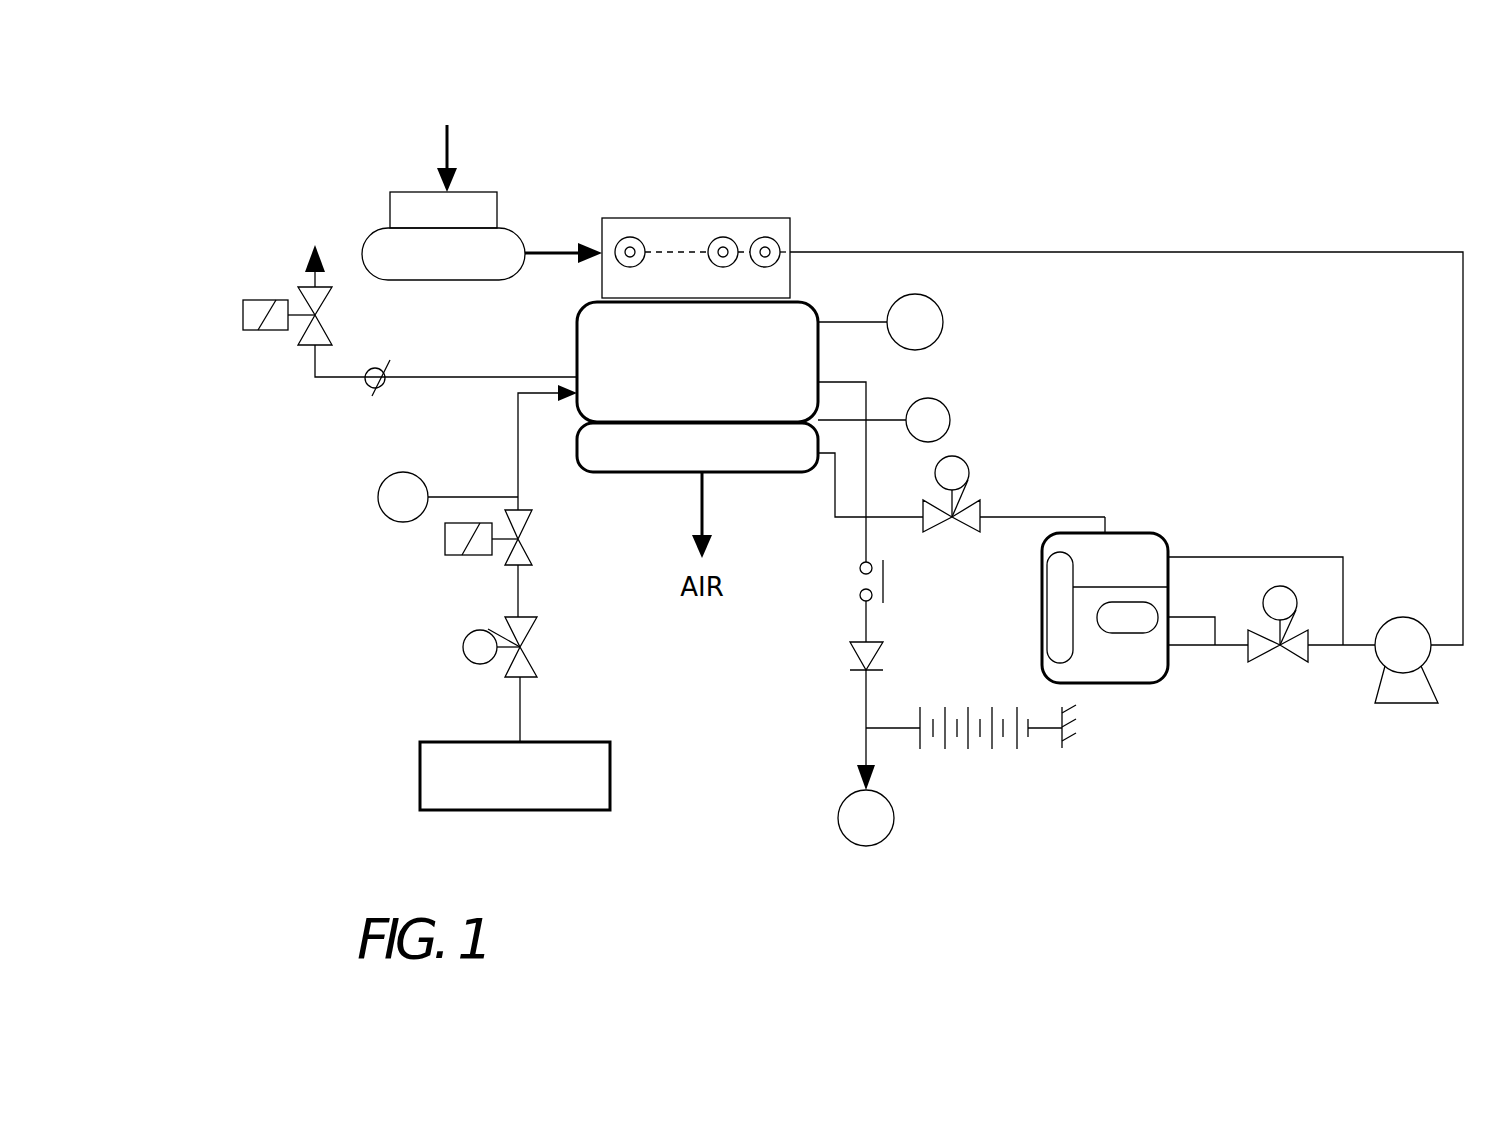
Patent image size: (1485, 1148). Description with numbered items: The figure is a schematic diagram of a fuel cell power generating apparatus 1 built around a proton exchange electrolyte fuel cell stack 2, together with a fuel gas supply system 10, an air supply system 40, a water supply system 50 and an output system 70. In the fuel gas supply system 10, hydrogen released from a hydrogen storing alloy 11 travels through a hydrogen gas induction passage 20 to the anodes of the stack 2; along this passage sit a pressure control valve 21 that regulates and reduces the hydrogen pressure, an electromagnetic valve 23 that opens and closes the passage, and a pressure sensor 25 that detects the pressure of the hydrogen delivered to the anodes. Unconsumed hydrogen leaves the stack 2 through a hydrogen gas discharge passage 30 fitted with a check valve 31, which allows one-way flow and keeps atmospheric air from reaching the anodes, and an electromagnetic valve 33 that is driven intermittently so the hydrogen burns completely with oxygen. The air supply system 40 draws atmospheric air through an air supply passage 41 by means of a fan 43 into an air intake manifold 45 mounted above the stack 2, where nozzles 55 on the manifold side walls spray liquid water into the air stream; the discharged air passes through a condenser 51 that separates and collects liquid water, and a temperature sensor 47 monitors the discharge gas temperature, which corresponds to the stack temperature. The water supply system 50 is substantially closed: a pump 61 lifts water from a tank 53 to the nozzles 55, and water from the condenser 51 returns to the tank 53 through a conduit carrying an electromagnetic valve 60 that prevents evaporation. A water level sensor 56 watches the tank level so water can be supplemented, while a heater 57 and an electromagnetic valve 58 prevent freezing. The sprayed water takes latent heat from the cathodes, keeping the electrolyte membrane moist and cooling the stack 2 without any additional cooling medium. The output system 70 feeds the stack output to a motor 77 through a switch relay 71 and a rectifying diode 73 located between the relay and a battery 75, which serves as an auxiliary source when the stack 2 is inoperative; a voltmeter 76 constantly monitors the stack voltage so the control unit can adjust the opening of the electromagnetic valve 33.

The fuel cell power generating apparatus 1 is at (1092, 160).
The proton exchange electrolyte fuel cell stack 2 is at (603, 350).
The fuel gas supply system 10 is at (427, 693).
The hydrogen storing alloy 11 is at (420, 780).
The hydrogen gas induction passage 20 is at (524, 712).
The pressure control valve 21 is at (463, 647).
The electromagnetic valve 23 is at (445, 539).
The pressure sensor 25 is at (378, 497).
The hydrogen gas discharge passage 30 is at (511, 376).
The check valve 31 is at (368, 385).
The electromagnetic valve 33 is at (243, 310).
The air supply system 40 is at (323, 167).
The air supply passage 41 is at (542, 245).
The fan 43 is at (428, 281).
The air intake manifold 45 is at (602, 232).
The temperature sensor 47 is at (950, 417).
The water supply system 50 is at (1338, 532).
The condenser 51 is at (770, 474).
The tank 53 is at (1105, 683).
The nozzles 55 is at (640, 240).
The water level sensor 56 is at (1047, 603).
The heater 57 is at (1130, 602).
The electromagnetic valve 58 is at (1248, 662).
The electromagnetic valve 60 is at (969, 468).
The pump 61 is at (1403, 703).
The output system 70 is at (826, 622).
The switch relay 71 is at (886, 581).
The rectifying diode 73 is at (884, 652).
The battery 75 is at (977, 750).
The voltmeter 76 is at (944, 322).
The motor 77 is at (840, 810).